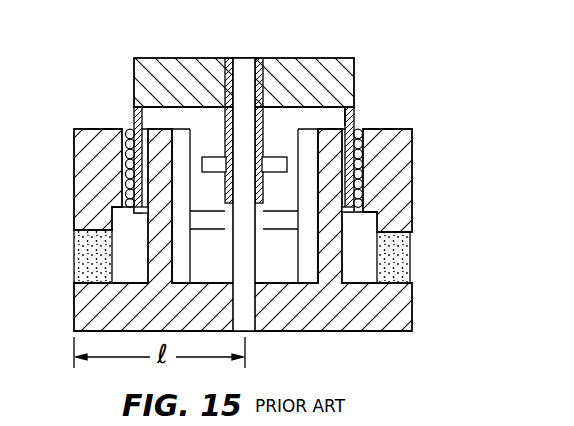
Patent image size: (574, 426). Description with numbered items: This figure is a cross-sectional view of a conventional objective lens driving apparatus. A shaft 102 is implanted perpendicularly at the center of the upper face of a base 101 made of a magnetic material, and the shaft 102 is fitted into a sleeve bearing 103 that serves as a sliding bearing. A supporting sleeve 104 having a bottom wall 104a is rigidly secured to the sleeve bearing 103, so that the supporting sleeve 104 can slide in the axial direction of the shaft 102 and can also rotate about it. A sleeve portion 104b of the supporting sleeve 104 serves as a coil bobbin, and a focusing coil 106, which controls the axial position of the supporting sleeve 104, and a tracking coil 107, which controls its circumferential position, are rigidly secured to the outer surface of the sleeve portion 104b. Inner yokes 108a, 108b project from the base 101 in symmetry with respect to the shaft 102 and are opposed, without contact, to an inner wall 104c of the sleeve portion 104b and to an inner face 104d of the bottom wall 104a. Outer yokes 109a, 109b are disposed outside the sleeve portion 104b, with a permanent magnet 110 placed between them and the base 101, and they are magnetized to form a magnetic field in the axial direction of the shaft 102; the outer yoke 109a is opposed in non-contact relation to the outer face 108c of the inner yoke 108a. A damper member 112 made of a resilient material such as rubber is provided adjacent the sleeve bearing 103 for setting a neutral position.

The base 101 is at (316, 323).
The shaft 102 is at (250, 256).
The sleeve bearing 103 is at (268, 57).
The supporting sleeve 104 is at (274, 113).
The bottom wall 104a is at (167, 57).
The sleeve portion 104b is at (355, 125).
The inner wall 104c is at (347, 98).
The inner face 104d is at (331, 116).
The focusing coil 106 is at (131, 128).
The tracking coil 107 is at (358, 168).
The inner yoke 108a is at (176, 254).
The inner yoke 108b is at (343, 263).
The outer face 108c is at (152, 248).
The outer yoke 109a is at (74, 132).
The outer yoke 109b is at (398, 128).
The permanent magnet 110 is at (403, 243).
The damper member 112 is at (277, 156).